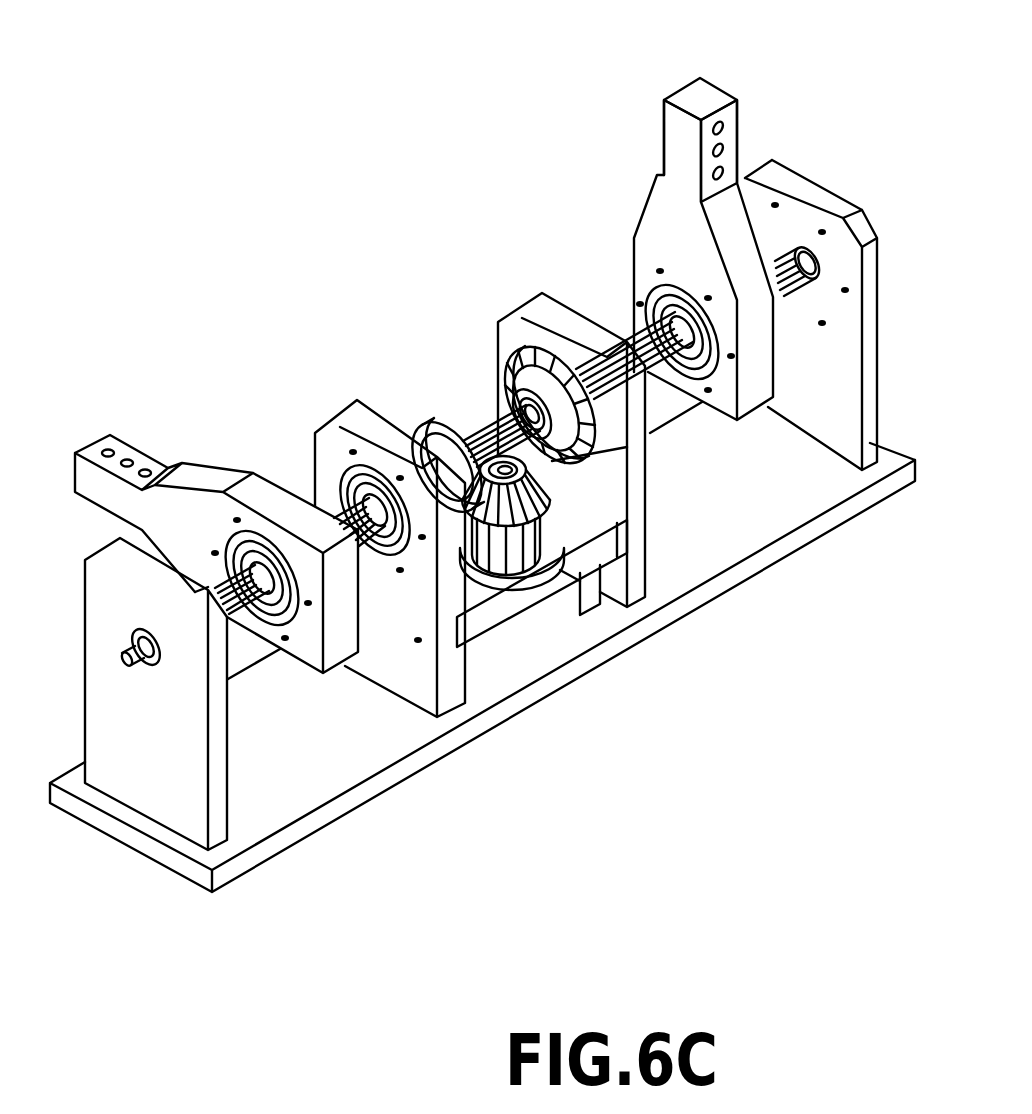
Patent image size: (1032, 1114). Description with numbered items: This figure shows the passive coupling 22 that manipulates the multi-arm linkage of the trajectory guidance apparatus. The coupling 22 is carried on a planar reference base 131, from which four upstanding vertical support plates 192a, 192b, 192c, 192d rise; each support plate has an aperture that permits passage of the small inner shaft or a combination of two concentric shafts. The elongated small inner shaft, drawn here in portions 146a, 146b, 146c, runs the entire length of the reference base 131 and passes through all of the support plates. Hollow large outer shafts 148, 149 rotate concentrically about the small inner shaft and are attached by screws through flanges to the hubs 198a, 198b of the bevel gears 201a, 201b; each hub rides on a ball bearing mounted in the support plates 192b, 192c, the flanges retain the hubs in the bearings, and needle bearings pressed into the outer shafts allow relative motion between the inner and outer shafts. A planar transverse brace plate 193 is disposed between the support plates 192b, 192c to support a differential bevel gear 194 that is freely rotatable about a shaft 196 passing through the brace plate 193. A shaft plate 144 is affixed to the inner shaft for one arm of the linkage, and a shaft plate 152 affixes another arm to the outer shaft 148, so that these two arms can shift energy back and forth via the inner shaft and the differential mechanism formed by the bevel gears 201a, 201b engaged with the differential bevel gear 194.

The passive coupling 22 is at (352, 190).
The planar reference base 131 is at (747, 530).
The shaft plate 144 is at (685, 140).
The small inner shaft 146a is at (770, 268).
The small inner shaft 146b is at (445, 450).
The small inner shaft 146c is at (231, 614).
The large outer shaft 148 is at (335, 498).
The large outer shaft 149 is at (632, 242).
The shaft plate 152 is at (90, 484).
The upstanding vertical support plate 192a is at (220, 803).
The upstanding vertical support plate 192b is at (452, 693).
The upstanding vertical support plate 192c is at (640, 473).
The upstanding vertical support plate 192d is at (870, 445).
The planar transverse brace plate 193 is at (520, 597).
The differential bevel gear 194 is at (583, 575).
The shaft 196 is at (493, 426).
The hub 198a is at (556, 350).
The hub 198b is at (347, 440).
The bevel gear 201a is at (505, 398).
The bevel gear 201b is at (472, 472).